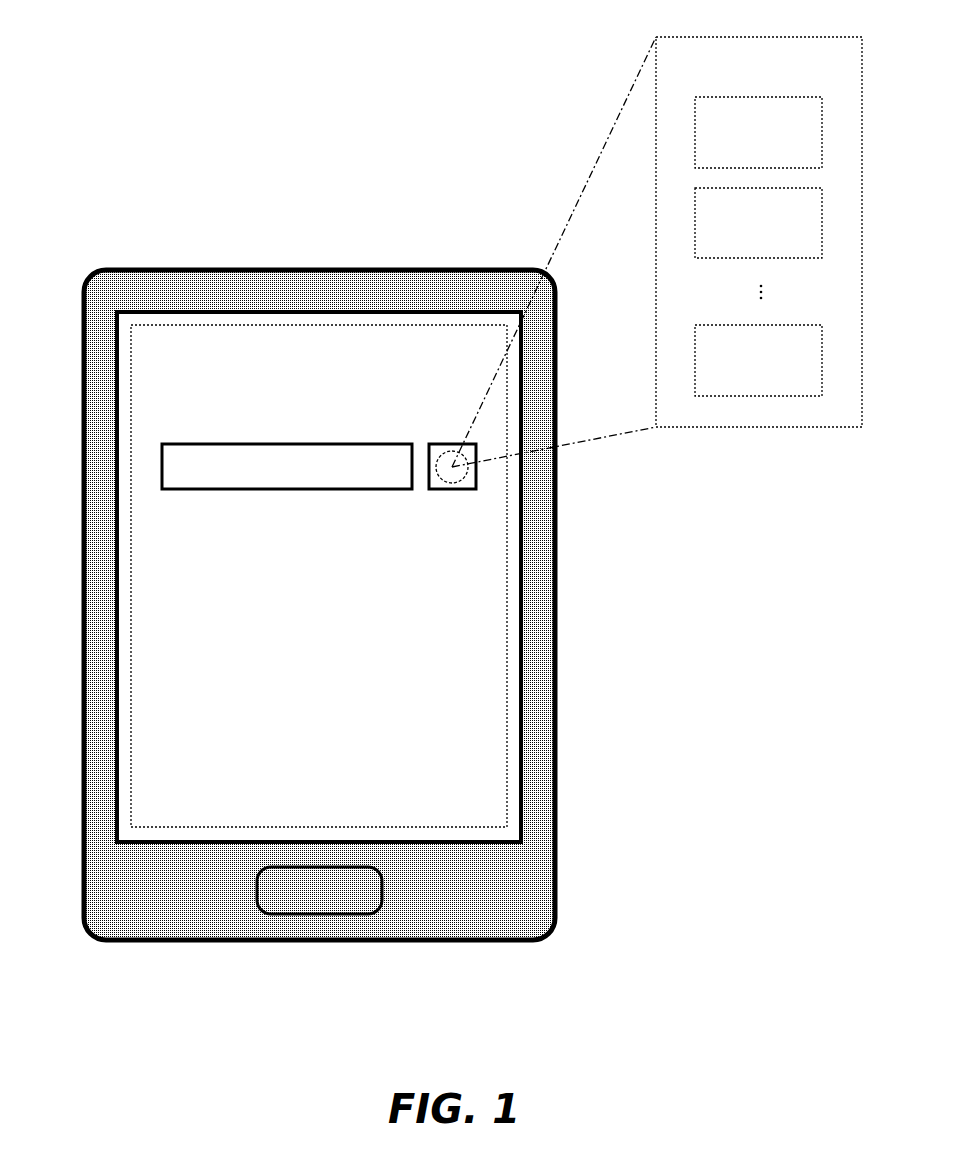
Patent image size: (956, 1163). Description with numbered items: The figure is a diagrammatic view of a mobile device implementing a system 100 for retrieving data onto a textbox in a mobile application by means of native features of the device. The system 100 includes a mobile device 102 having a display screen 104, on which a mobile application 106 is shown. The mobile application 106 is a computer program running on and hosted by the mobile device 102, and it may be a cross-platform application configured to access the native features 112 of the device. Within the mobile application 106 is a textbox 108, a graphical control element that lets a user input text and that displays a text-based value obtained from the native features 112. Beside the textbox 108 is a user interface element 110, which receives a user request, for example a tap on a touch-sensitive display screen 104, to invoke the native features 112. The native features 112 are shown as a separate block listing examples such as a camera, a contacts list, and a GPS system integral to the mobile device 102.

The system 100 is at (117, 75).
The mobile device 102 is at (160, 269).
The display screen 104 is at (422, 308).
The mobile application 106 is at (160, 324).
The textbox 108 is at (193, 443).
The user interface element 110 is at (452, 443).
The native features 112 is at (657, 252).